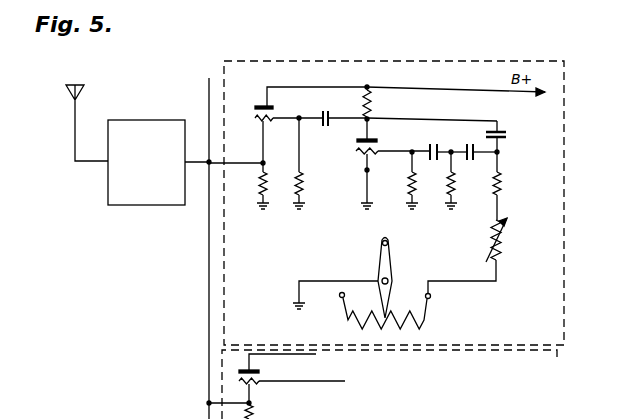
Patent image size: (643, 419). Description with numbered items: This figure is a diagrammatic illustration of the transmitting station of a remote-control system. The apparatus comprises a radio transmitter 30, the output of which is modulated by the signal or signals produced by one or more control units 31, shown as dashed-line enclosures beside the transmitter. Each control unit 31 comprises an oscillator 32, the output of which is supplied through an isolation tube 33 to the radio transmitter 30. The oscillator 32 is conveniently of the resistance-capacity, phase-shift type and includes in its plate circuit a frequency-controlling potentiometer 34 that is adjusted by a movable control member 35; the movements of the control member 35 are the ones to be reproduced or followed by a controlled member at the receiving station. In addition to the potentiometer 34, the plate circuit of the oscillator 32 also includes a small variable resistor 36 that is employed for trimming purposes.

The radio transmitter 30 is at (146, 162).
The control unit 31 is at (565, 262).
The oscillator 32 is at (449, 149).
The isolation tube 33 is at (254, 118).
The frequency-controlling potentiometer 34 is at (428, 317).
The movable control member 35 is at (392, 247).
The variable resistor 36 is at (503, 241).